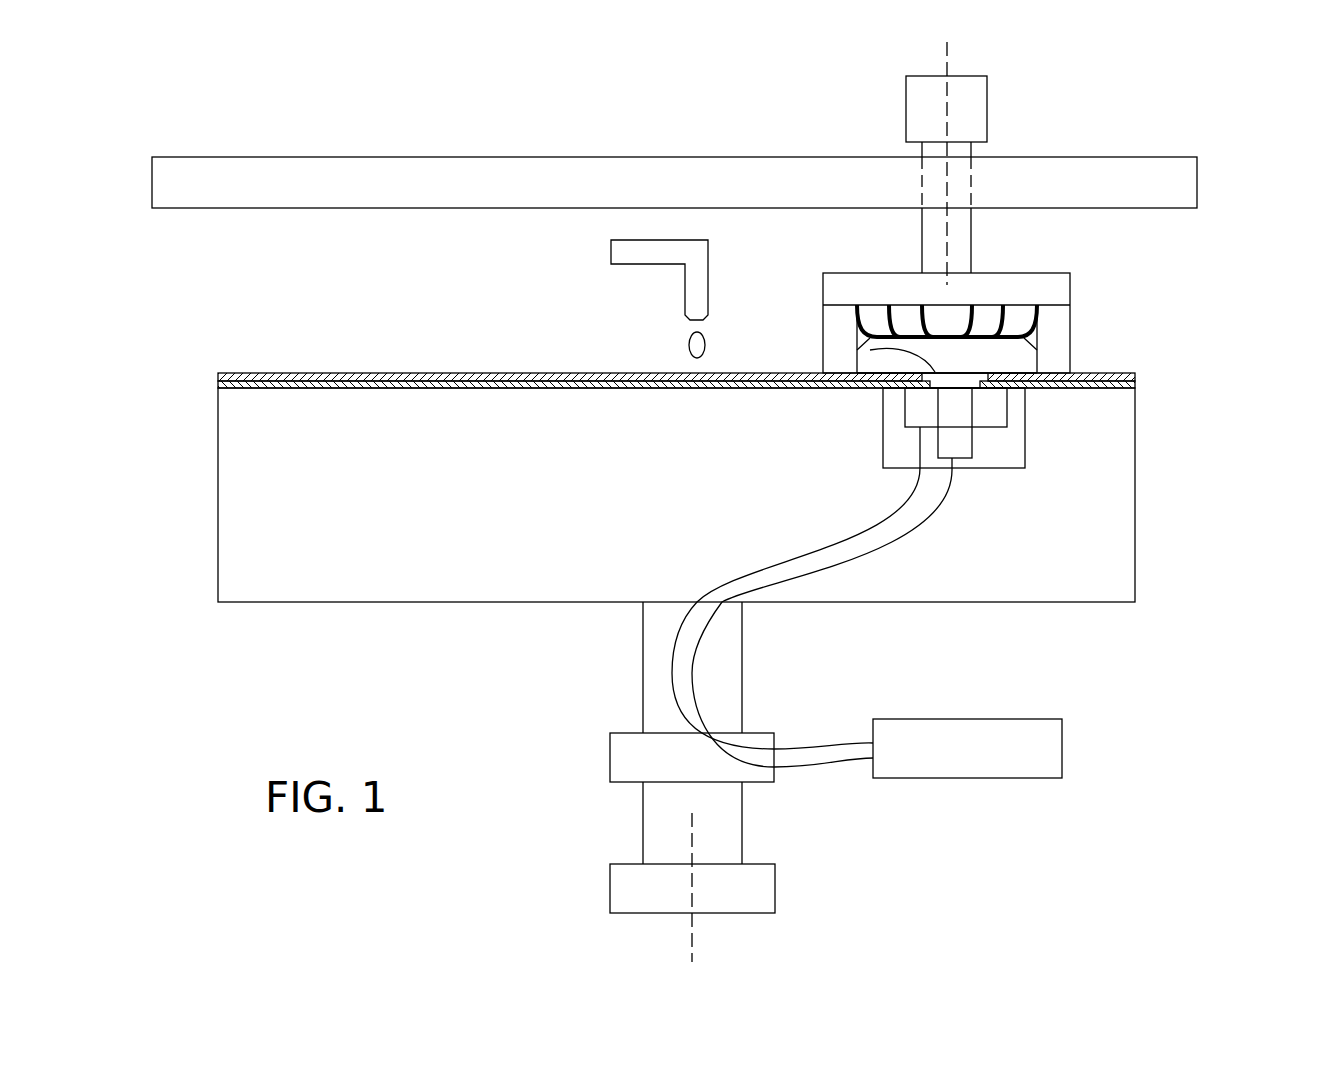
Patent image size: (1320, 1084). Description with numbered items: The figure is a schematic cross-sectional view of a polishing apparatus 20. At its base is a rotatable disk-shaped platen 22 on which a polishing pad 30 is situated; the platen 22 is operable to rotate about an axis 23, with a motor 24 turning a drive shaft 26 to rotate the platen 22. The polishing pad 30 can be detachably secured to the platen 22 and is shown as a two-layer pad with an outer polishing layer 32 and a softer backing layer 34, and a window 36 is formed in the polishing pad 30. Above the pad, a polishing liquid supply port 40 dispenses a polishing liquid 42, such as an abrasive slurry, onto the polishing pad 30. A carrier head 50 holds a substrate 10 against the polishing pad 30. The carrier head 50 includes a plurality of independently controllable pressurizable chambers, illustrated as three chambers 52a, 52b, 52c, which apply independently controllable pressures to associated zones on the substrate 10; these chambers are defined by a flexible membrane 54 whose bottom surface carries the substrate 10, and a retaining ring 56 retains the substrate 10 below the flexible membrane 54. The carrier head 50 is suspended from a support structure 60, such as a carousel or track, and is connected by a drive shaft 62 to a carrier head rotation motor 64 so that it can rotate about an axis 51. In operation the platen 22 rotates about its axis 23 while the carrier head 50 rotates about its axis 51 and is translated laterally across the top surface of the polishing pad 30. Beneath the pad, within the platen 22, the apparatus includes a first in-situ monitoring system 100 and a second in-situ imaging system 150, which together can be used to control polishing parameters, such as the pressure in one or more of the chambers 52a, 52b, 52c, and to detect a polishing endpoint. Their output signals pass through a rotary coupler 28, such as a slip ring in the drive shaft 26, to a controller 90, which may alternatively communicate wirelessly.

The polishing apparatus 20 is at (205, 111).
The support structure 60 is at (1170, 157).
The carrier head rotation motor 64 is at (906, 118).
The axis 51 is at (947, 57).
The drive shaft 62 is at (933, 250).
The carrier head 50 is at (1130, 344).
The retaining ring 56 is at (1070, 340).
The flexible membrane 54 is at (1005, 342).
The pressurizable chamber 52a is at (947, 320).
The pressurizable chamber 52b is at (988, 320).
The pressurizable chamber 52c is at (1025, 318).
The substrate 10 is at (936, 365).
The window 36 is at (870, 350).
The polishing pad 30 is at (748, 399).
The outer polishing layer 32 is at (1136, 375).
The backing layer 34 is at (1136, 385).
The platen 22 is at (1135, 527).
The first in-situ monitoring system 100 is at (972, 445).
The second in-situ imaging system 150 is at (905, 412).
The drive shaft 26 is at (742, 675).
The rotary coupler 28 is at (610, 762).
The motor 24 is at (775, 896).
The axis 23 is at (695, 937).
The controller 90 is at (1045, 778).
The polishing liquid supply port 40 is at (685, 283).
The polishing liquid 42 is at (689, 345).